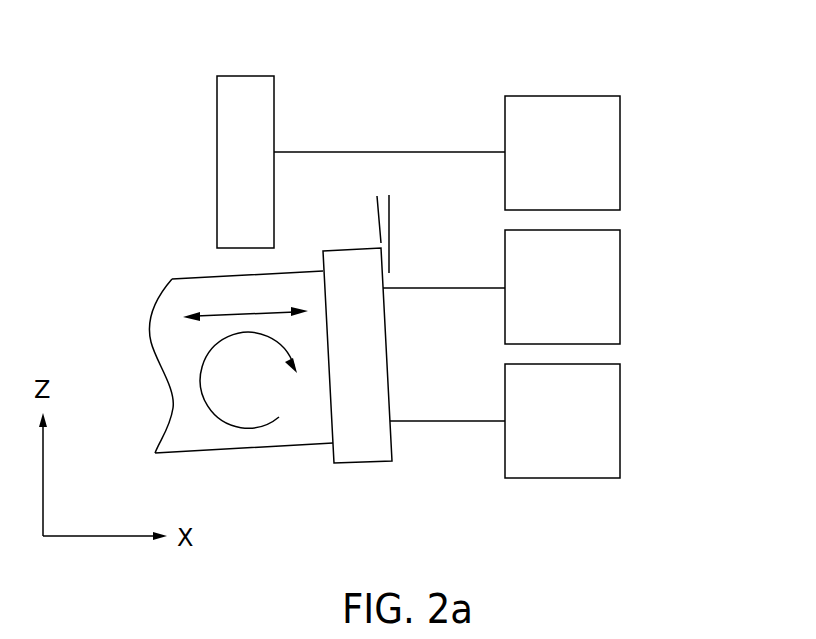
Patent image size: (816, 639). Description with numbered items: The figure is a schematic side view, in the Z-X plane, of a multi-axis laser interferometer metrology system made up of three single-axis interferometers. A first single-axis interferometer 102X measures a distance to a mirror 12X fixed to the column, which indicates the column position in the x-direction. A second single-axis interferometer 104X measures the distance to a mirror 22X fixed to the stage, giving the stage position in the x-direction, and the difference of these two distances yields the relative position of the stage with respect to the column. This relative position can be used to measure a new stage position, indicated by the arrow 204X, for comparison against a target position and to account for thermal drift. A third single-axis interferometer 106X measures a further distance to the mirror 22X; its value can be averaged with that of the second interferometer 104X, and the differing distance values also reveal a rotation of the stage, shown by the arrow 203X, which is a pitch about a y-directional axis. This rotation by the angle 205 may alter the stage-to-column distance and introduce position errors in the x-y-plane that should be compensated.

The mirror 12X is at (258, 109).
The first single-axis interferometer 102X is at (562, 112).
The second single-axis interferometer 104X is at (605, 268).
The third single-axis interferometer 106X is at (605, 450).
The angle 205 is at (387, 196).
The mirror 22X is at (365, 440).
The arrow 204X is at (230, 313).
The arrow 203X is at (277, 421).